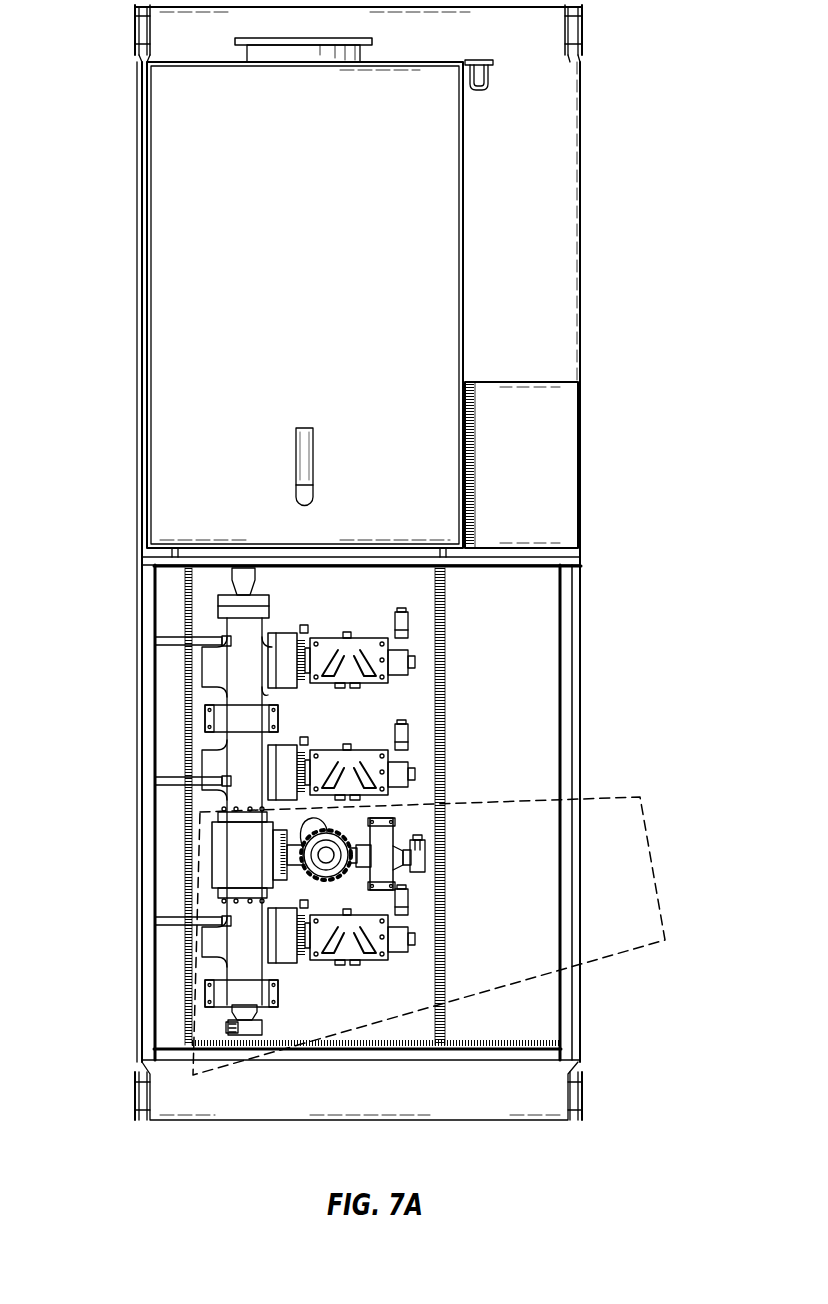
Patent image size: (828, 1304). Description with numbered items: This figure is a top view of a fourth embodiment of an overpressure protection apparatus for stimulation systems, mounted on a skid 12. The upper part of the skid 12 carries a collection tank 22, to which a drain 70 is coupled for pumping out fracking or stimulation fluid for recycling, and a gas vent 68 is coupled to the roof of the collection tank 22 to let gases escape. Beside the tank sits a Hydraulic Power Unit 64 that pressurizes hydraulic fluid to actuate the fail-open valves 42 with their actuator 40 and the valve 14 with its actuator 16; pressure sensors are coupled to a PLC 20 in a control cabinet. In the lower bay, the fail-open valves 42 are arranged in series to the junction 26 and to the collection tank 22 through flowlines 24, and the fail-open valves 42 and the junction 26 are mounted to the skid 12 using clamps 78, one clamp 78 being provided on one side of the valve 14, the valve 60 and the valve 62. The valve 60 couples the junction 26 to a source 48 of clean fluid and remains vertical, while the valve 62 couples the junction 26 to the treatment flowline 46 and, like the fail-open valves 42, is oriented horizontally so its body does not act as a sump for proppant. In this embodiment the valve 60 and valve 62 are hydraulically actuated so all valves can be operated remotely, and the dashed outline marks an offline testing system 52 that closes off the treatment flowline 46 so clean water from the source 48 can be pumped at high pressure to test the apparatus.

The skid 12 is at (578, 145).
The collection tank 22 is at (152, 285).
The drain 70 is at (485, 88).
The gas vent 68 is at (300, 452).
The PLC 20 is at (570, 465).
The Hydraulic Power Unit 64 is at (578, 432).
The flowlines 24 is at (232, 582).
The valve 14 is at (232, 657).
The fail-open valves 42 is at (183, 811).
The clamps 78 is at (205, 718).
The actuator 16 is at (360, 642).
The actuator 40 is at (362, 770).
The junction 26 is at (215, 857).
The valve 60 is at (330, 882).
The valve 62 is at (268, 940).
The offline testing system 52 is at (638, 800).
The source 48 is at (424, 857).
The treatment flowline 46 is at (243, 1035).